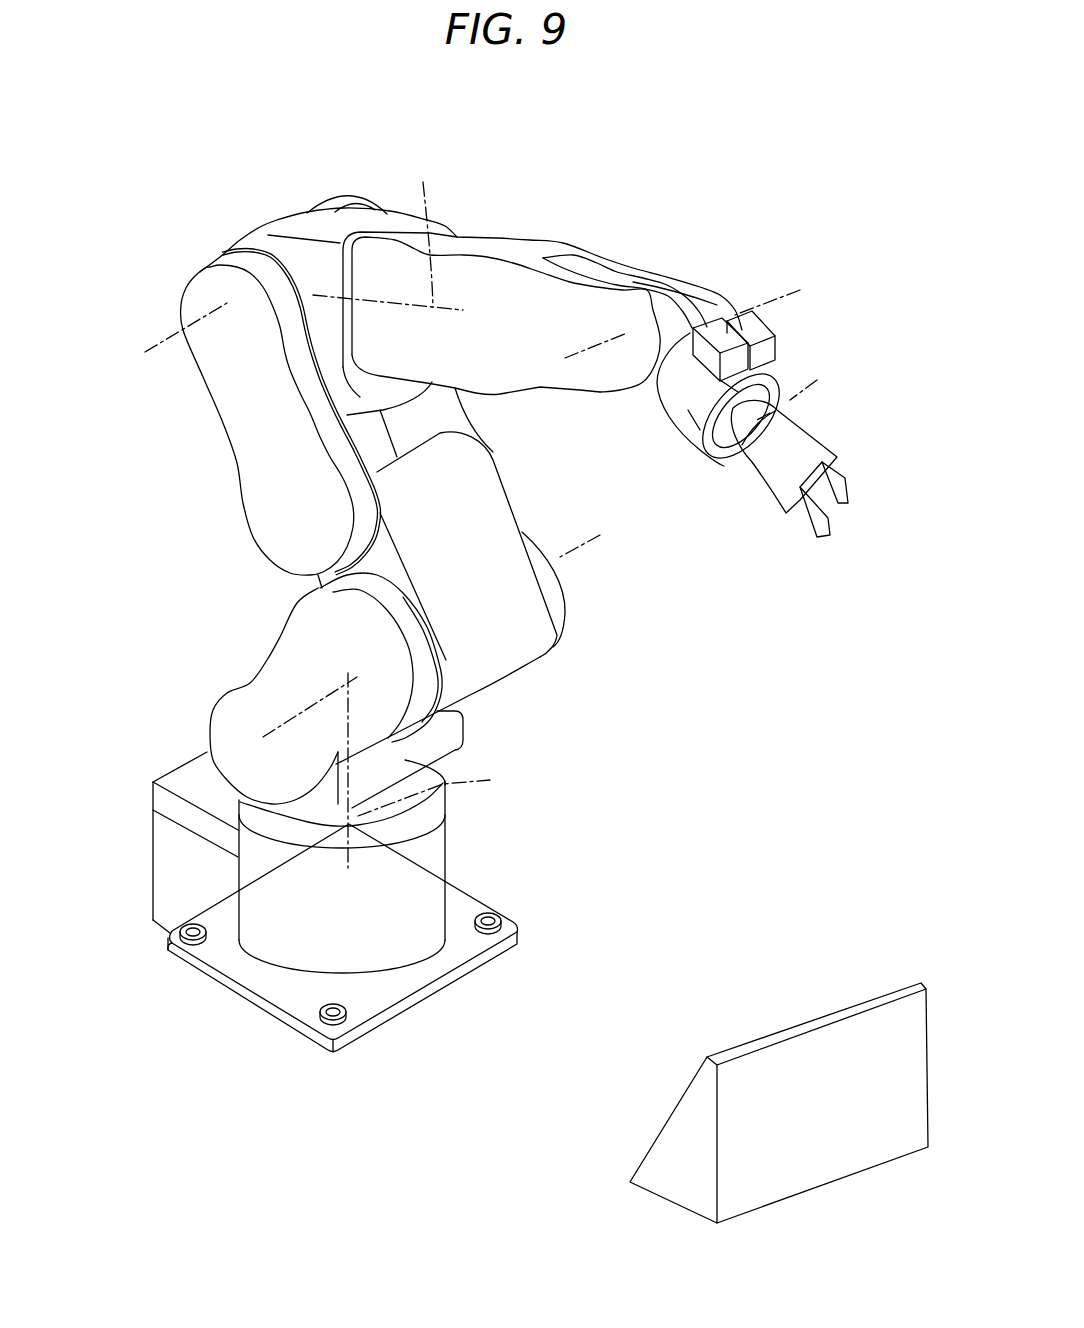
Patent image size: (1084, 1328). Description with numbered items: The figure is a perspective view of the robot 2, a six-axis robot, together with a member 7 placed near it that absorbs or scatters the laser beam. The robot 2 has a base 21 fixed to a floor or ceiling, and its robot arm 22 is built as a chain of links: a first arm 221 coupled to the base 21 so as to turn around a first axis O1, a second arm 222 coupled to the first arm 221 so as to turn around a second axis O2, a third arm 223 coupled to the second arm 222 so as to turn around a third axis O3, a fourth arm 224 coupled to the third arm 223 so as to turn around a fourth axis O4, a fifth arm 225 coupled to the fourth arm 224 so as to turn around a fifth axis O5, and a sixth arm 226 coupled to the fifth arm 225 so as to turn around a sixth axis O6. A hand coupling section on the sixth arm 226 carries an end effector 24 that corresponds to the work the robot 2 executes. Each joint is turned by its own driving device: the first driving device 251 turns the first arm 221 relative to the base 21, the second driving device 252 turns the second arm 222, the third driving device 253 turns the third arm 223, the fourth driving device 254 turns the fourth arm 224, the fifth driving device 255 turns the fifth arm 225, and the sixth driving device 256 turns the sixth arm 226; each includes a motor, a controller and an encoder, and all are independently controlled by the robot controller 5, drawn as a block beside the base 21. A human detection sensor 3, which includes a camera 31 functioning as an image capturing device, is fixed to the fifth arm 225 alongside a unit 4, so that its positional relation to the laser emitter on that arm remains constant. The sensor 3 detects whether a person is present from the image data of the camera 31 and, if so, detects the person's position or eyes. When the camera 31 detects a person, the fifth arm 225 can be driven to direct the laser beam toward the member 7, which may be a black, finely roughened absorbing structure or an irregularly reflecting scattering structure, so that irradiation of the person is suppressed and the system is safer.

The robot 2 is at (574, 200).
The robot arm 22 is at (292, 204).
The base 21 is at (272, 946).
The first arm 221 is at (233, 752).
The second arm 222 is at (497, 617).
The third arm 223 is at (280, 230).
The fourth arm 224 is at (487, 277).
The fifth arm 225 is at (670, 400).
The sixth arm 226 is at (723, 460).
The first driving device 251 is at (405, 862).
The second driving device 252 is at (538, 618).
The third driving device 253 is at (223, 348).
The fourth driving device 254 is at (314, 298).
The fifth driving device 255 is at (625, 330).
The sixth driving device 256 is at (687, 415).
The human detection sensor 3 is at (741, 302).
The camera 31 is at (718, 322).
The imaging section 4 is at (757, 333).
The end effector 24 is at (817, 447).
The robot controller 5 is at (183, 850).
The member 7 is at (803, 1172).
The first axis O1 is at (439, 770).
The second axis O2 is at (452, 622).
The third axis O3 is at (168, 336).
The fourth axis O4 is at (388, 232).
The fifth axis O5 is at (701, 314).
The sixth axis O6 is at (796, 382).